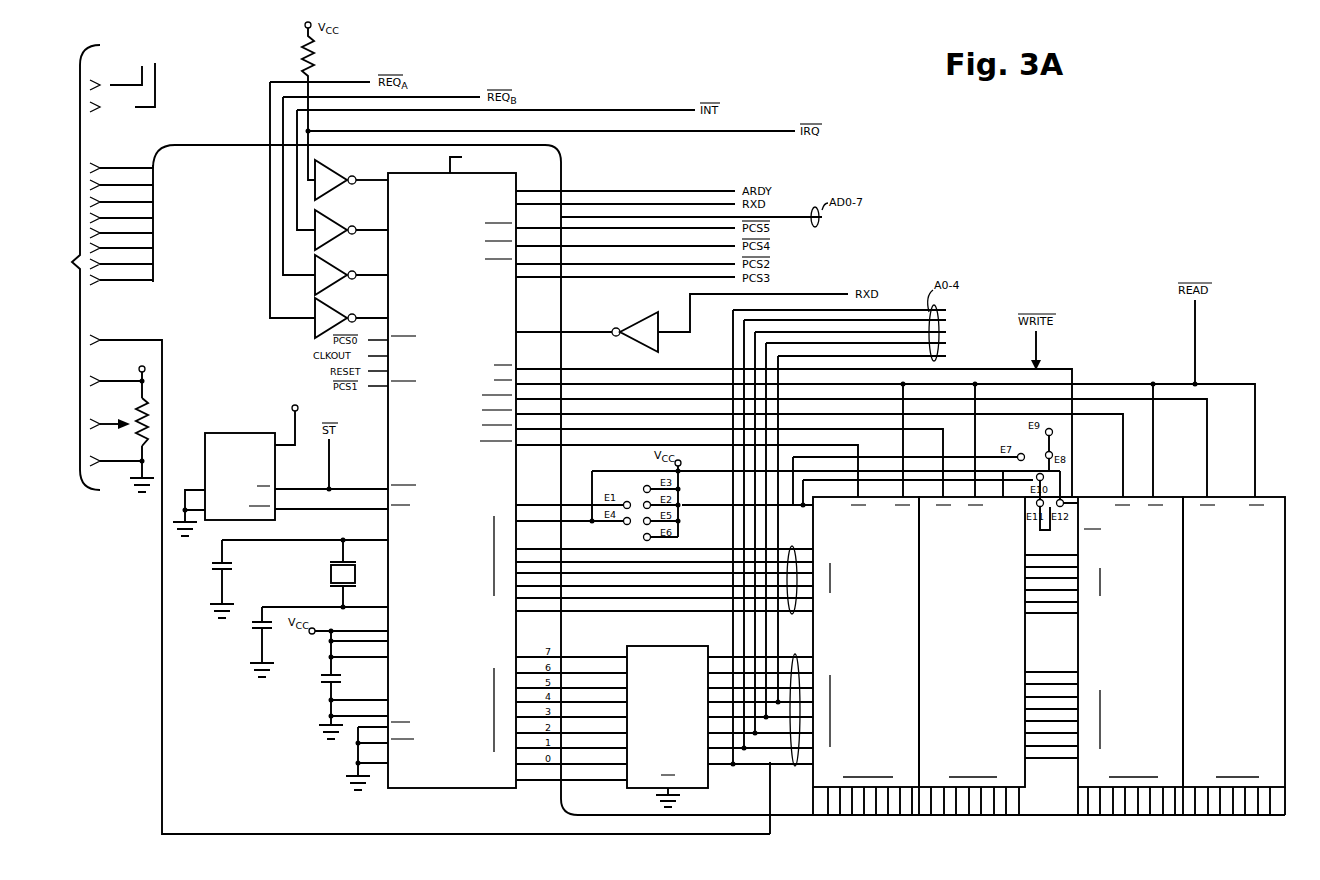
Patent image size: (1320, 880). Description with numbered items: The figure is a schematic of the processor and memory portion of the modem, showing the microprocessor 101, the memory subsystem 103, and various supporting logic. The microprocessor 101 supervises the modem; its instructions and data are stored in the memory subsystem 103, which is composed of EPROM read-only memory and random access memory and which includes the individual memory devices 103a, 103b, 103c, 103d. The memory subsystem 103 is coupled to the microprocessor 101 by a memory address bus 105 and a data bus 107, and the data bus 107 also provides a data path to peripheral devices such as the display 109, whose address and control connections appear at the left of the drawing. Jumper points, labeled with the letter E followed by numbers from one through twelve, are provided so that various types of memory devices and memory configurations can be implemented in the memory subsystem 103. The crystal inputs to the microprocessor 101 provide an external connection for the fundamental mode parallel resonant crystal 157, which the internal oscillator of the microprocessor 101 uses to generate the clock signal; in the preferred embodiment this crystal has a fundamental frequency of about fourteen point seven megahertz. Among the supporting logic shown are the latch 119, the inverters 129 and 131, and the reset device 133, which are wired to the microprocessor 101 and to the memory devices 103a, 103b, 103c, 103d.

The microprocessor 101 is at (450, 792).
The memory subsystem 103 is at (1034, 563).
The memory device 103a is at (815, 790).
The memory device 103b is at (1025, 787).
The memory device 103c is at (1074, 780).
The memory device 103d is at (1299, 489).
The memory address bus 105 is at (798, 760).
The data bus 107 is at (556, 797).
The display 109 is at (389, 439).
The latch 119 is at (641, 790).
The inverter 129 is at (254, 312).
The inverter 131 is at (338, 174).
The reset circuit 133 is at (222, 433).
The resonant crystal 157 is at (357, 574).